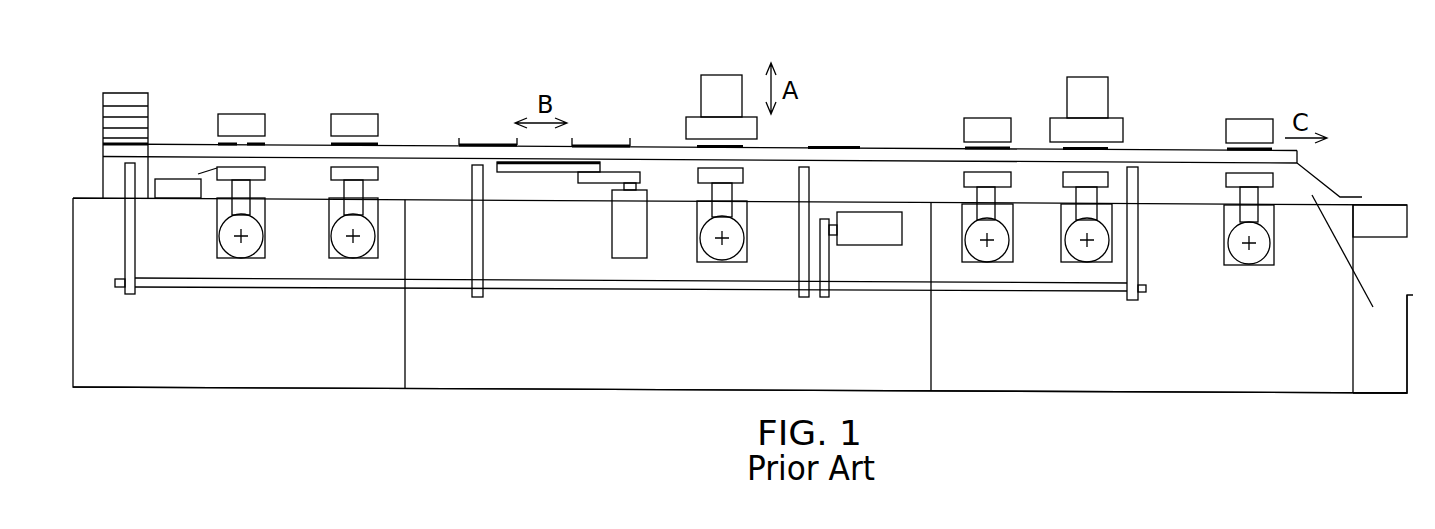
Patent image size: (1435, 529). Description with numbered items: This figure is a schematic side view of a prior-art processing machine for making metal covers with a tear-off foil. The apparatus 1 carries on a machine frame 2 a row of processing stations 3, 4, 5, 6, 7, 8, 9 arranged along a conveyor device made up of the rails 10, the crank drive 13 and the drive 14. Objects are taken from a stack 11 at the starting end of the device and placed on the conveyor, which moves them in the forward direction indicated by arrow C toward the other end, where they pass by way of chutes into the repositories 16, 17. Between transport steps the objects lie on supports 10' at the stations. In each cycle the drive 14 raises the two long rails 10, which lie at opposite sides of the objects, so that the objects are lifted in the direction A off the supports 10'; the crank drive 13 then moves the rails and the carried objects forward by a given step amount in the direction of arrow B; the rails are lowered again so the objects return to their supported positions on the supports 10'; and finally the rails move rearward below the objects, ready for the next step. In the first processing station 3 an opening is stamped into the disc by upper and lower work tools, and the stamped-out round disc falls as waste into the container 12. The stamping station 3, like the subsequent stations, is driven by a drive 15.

The apparatus 1 is at (500, 404).
The machine frame 2 is at (360, 370).
The first processing station 3 is at (232, 113).
The processing station 4 is at (348, 113).
The processing station 5 is at (693, 123).
The processing station 6 is at (717, 80).
The processing station 7 is at (977, 122).
The processing station 8 is at (1062, 122).
The processing station 9 is at (1237, 128).
The rails 10 is at (732, 151).
The supports 10' is at (859, 116).
The stack 11 is at (123, 109).
The container 12 is at (177, 182).
The crank drive 13 is at (625, 239).
The drive 14 is at (880, 220).
The drive 15 is at (226, 242).
The repository 16 is at (1376, 210).
The repository 17 is at (1380, 382).